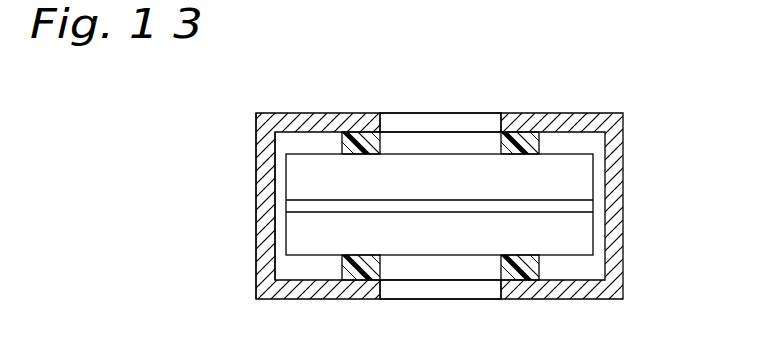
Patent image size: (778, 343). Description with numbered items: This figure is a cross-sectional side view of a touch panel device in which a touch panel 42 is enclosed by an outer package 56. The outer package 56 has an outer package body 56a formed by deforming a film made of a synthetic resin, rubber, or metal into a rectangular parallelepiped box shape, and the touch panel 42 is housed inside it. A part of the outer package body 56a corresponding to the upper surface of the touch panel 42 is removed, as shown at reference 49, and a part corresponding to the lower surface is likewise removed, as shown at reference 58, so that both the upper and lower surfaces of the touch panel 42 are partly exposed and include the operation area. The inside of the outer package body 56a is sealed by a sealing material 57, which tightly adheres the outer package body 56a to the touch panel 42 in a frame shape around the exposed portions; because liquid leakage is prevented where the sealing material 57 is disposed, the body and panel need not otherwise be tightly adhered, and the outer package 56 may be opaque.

The outer package 56 is at (630, 266).
The outer package body 56a is at (256, 223).
The removed portion of upper surface 49 is at (435, 118).
The removed portion of lower surface 58 is at (413, 290).
The touch panel 42 is at (463, 252).
The sealing material 57 is at (365, 132).